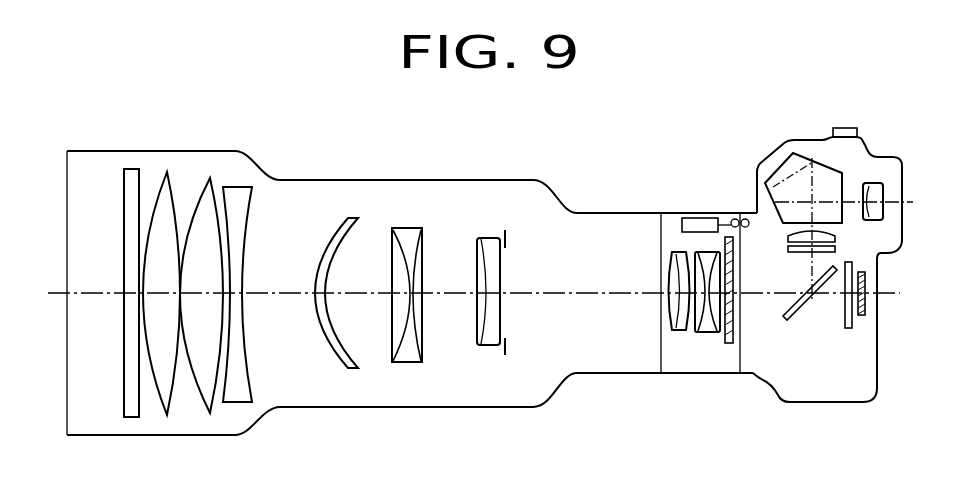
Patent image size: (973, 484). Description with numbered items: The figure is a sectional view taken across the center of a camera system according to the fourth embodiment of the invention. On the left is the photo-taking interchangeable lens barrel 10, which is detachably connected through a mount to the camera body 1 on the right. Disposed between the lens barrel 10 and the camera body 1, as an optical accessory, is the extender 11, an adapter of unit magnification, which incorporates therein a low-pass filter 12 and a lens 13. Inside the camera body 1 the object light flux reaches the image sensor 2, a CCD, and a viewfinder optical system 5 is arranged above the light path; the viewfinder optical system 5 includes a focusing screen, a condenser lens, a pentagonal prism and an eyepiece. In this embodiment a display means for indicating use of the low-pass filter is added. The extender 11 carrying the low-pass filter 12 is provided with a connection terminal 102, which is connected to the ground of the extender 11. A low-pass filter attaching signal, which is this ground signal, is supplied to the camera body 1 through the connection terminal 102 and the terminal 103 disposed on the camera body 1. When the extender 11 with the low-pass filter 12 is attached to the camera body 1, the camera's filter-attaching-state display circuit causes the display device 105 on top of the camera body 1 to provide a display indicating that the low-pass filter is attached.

The camera body 1 is at (837, 380).
The image sensor (CCD) 2 is at (865, 276).
The viewfinder optical system 5 is at (858, 176).
The photo-taking interchangeable lens barrel 10 is at (468, 378).
The extender 11 is at (673, 358).
The low-pass filter 12 is at (727, 345).
The lens 13 is at (720, 340).
The connection terminal 102 is at (731, 221).
The terminal 103 is at (744, 219).
The display device 105 is at (843, 128).